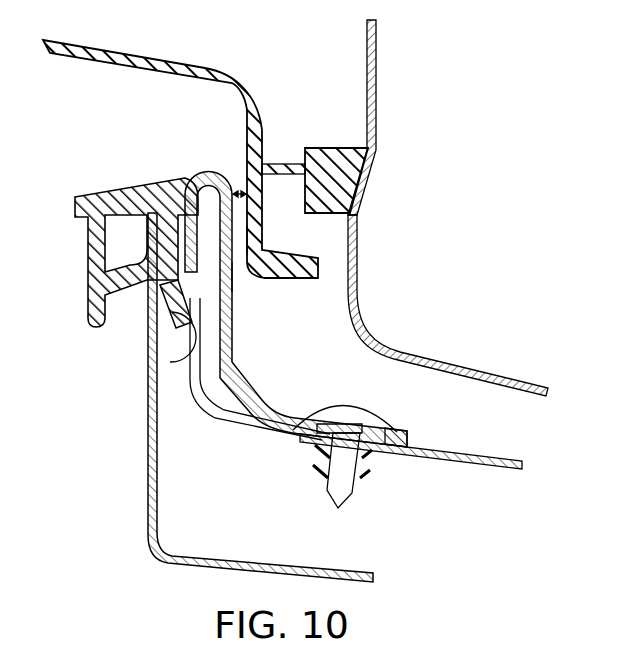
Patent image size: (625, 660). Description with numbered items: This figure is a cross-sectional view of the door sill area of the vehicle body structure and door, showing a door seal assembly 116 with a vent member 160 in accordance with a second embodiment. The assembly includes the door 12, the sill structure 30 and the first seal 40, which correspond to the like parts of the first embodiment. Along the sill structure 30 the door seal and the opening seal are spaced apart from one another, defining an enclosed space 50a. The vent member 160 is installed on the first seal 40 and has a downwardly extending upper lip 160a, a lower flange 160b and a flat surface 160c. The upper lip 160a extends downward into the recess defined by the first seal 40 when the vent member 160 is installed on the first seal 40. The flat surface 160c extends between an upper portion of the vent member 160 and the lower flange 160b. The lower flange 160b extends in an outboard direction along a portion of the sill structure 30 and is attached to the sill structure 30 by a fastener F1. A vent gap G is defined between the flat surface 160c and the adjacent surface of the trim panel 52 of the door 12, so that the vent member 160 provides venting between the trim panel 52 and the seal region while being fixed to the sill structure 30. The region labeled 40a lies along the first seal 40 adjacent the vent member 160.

The trim panel 52 is at (172, 52).
The door 12 is at (378, 88).
The door seal assembly 116 is at (515, 128).
The upper lip 160a is at (125, 197).
The vent gap G is at (240, 190).
The liner edge portion 40a is at (243, 243).
The flat surface 160c is at (234, 278).
The vent member 160 is at (234, 324).
The enclosed space 50a is at (352, 358).
The first seal 40 is at (185, 350).
The fastener F1 is at (350, 408).
The lower flange 160b is at (400, 430).
The sill structure 30 is at (490, 458).